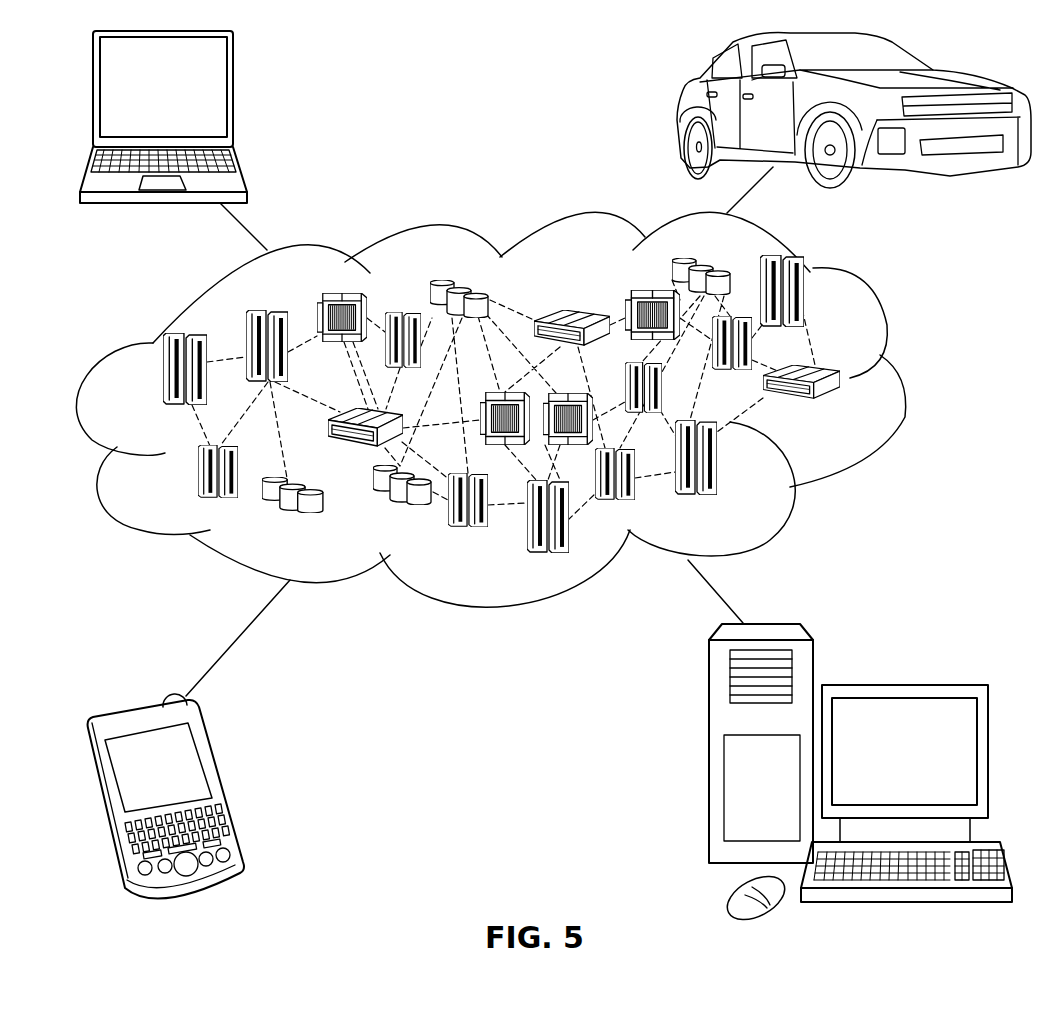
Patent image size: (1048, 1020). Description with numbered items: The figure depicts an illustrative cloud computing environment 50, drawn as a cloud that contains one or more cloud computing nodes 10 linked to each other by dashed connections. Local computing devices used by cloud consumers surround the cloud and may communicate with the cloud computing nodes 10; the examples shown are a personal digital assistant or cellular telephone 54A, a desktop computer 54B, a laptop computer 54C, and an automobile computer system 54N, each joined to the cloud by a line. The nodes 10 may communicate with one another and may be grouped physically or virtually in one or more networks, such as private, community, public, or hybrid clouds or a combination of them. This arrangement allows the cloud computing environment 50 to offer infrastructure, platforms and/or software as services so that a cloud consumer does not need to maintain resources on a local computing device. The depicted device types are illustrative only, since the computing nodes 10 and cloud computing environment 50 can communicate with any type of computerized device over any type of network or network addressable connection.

The cloud computing node 10 is at (849, 415).
The cloud computing environment 50 is at (518, 409).
The personal digital assistant or cellular telephone 54A is at (225, 780).
The desktop computer 54B is at (903, 682).
The laptop computer 54C is at (233, 96).
The automobile computer system 54N is at (680, 110).